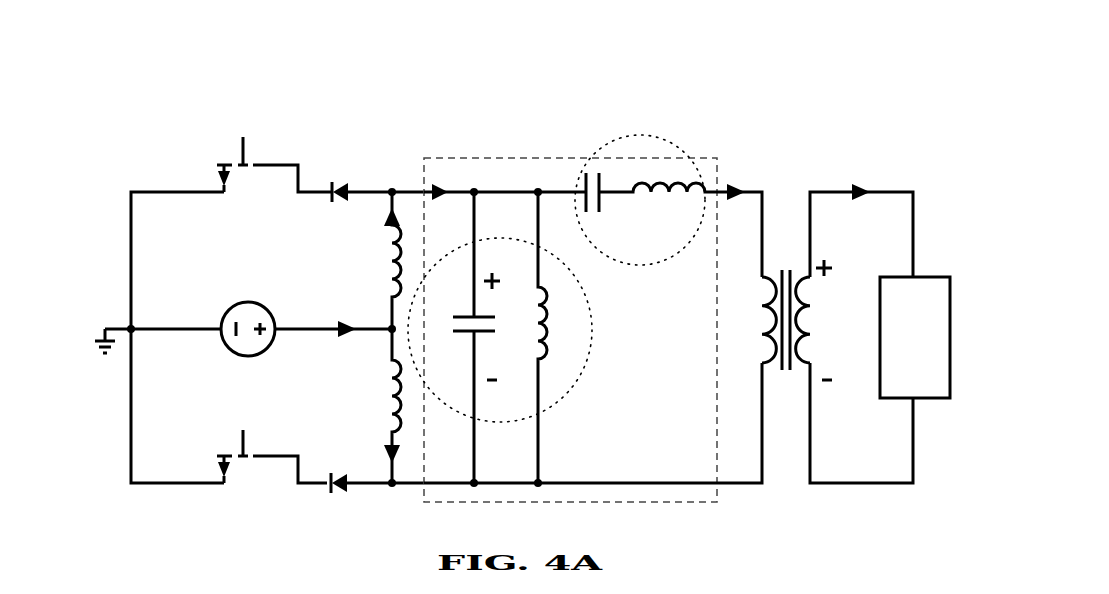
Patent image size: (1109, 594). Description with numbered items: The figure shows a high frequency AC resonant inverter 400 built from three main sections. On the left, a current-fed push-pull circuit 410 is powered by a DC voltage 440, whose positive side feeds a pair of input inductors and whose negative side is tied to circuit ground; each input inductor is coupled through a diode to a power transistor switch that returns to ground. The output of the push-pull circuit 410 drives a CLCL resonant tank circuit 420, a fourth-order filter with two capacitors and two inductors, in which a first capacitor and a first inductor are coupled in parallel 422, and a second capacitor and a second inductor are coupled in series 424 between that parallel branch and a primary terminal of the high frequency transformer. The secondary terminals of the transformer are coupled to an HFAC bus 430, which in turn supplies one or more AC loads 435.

The HFAC resonant inverter 400 is at (158, 33).
The push-pull circuit 410 is at (420, 140).
The CLCL resonant tank circuit 420 is at (757, 140).
The parallel connection of capacitor C1 and inductor L1 422 is at (563, 418).
The series connection of capacitor C2 and inductor L2 424 is at (657, 263).
The HFAC bus 430 is at (937, 143).
The AC loads 435 is at (940, 403).
The DC voltage (Vin) 440 is at (243, 356).